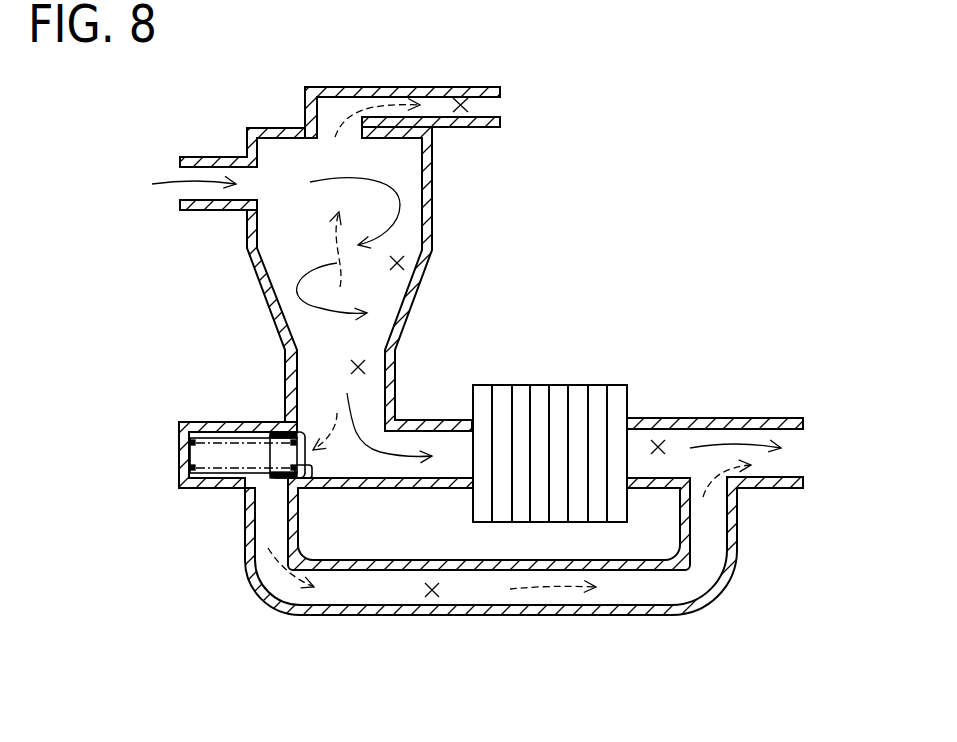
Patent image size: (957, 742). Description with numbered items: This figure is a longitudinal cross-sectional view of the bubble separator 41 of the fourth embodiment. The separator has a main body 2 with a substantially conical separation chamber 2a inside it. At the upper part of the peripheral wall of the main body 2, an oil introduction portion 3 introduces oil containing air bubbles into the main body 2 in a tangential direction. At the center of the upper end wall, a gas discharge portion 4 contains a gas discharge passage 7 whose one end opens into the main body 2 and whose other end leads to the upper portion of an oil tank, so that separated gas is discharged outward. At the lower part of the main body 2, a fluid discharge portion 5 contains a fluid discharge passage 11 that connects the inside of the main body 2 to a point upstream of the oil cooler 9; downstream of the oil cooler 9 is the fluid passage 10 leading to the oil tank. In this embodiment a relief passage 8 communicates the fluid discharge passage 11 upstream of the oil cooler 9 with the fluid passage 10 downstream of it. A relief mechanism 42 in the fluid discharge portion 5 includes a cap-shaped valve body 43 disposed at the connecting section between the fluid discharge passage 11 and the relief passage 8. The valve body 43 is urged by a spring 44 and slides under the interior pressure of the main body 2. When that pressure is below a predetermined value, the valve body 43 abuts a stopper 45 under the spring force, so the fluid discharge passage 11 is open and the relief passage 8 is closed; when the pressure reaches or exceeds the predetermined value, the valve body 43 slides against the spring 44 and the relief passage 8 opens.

The main body 2 is at (432, 184).
The separation chamber 2a is at (397, 263).
The oil introduction portion 3 is at (222, 156).
The gas discharge portion 4 is at (340, 86).
The fluid discharge portion 5 is at (187, 492).
The gas discharge passage 7 is at (461, 104).
The relief passage 8 is at (432, 594).
The oil cooler 9 is at (538, 385).
The fluid passage 10 is at (660, 445).
The fluid discharge passage 11 is at (358, 367).
The bubble separator 41 is at (257, 293).
The relief mechanism 42 is at (232, 495).
The valve body 43 is at (290, 437).
The spring 44 is at (225, 440).
The stopper 45 is at (313, 469).